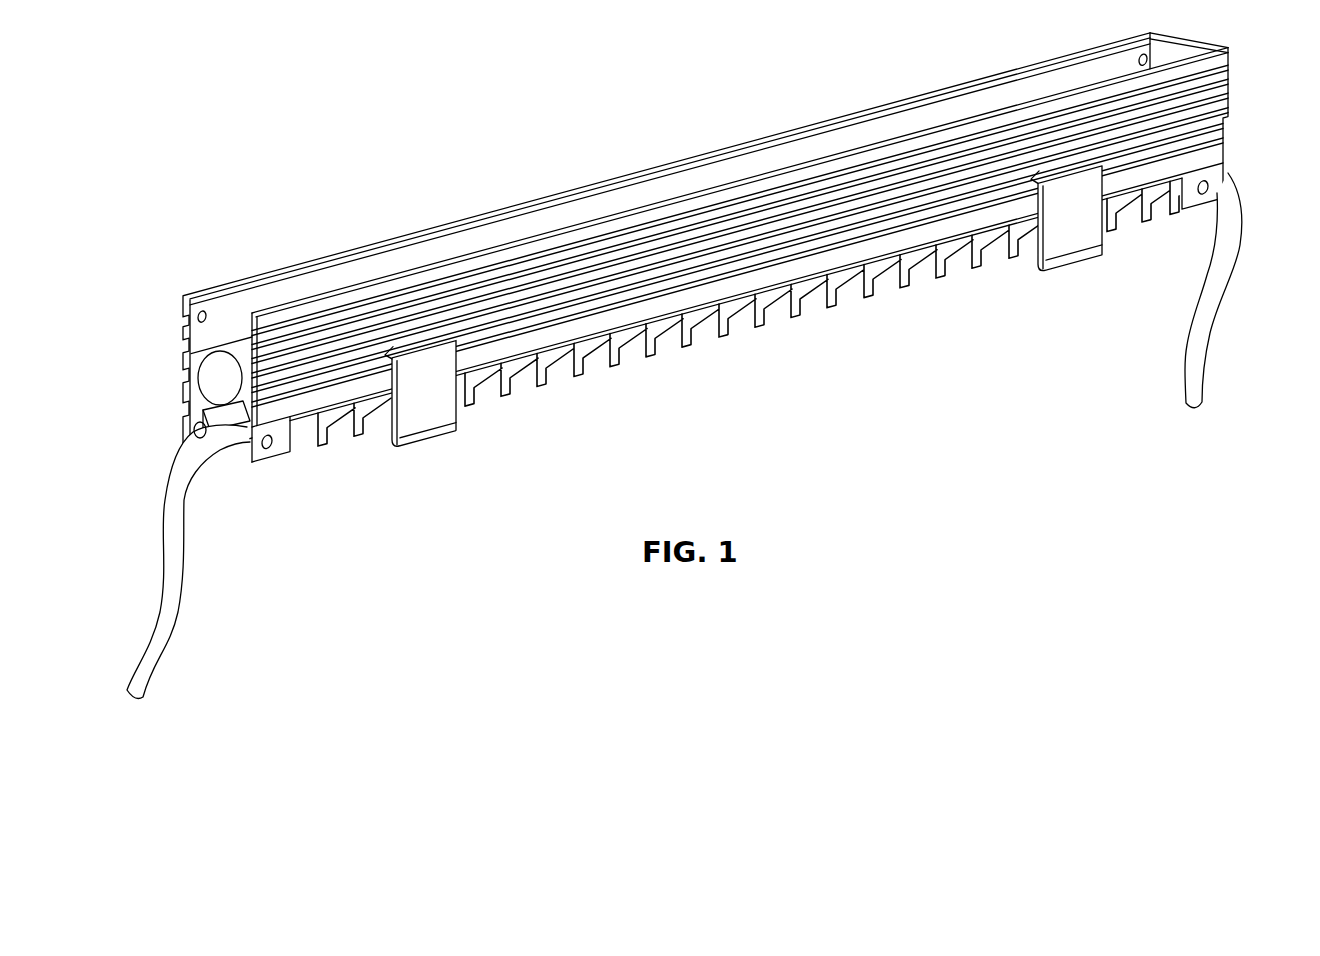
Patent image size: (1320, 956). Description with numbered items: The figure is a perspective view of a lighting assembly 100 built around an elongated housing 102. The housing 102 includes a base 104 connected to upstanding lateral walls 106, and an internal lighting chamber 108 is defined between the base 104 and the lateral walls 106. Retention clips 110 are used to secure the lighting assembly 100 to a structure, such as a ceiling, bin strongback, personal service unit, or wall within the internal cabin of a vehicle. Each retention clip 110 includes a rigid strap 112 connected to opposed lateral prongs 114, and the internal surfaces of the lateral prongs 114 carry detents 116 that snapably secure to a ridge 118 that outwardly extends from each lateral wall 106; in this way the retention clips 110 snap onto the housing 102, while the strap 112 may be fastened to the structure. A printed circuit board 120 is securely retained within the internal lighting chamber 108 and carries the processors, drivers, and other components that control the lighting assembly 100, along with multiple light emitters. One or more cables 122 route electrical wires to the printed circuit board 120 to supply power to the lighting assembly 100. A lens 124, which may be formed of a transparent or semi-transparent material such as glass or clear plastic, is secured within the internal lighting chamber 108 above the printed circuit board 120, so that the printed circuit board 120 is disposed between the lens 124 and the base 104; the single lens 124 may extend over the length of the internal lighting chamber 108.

The lighting assembly 100 is at (228, 205).
The housing 102 is at (297, 417).
The base 104 is at (530, 390).
The lateral walls 106 is at (308, 317).
The internal lighting chamber 108 is at (478, 245).
The retention clips 110 is at (410, 447).
The rigid strap 112 is at (377, 453).
The lateral prongs 114 is at (433, 400).
The detents 116 is at (388, 356).
The ridge 118 is at (643, 310).
The printed circuit board 120 is at (203, 422).
The cables 122 is at (168, 658).
The lens 124 is at (213, 383).